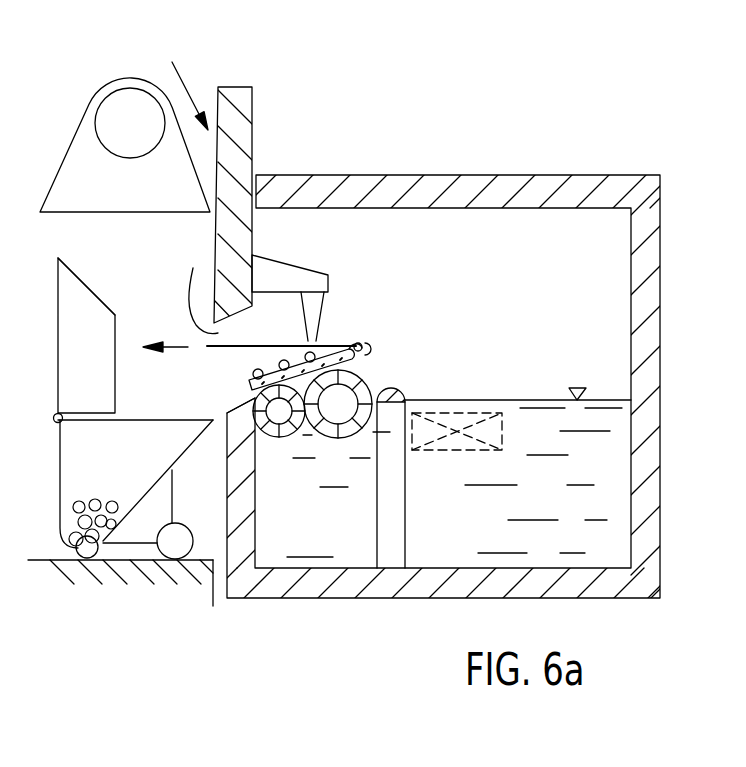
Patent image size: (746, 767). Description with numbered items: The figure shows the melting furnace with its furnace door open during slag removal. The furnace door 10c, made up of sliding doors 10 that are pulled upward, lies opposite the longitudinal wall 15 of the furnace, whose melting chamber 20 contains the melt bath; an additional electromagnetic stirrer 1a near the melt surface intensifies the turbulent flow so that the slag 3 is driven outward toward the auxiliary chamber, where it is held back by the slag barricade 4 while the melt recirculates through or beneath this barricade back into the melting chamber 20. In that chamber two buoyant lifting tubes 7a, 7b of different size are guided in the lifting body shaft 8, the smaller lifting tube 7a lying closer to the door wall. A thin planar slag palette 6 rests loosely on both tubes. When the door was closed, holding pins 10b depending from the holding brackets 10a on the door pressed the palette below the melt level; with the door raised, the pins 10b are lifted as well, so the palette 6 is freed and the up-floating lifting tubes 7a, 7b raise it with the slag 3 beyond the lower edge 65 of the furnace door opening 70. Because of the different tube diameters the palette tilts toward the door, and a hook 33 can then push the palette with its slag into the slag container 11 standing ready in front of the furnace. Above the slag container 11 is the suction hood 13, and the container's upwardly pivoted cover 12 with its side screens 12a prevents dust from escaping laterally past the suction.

The additional electromagnetic stirrer 1a is at (508, 437).
The slag 3 is at (322, 346).
The slag barricade 4 is at (404, 390).
The slag palette 6 is at (372, 362).
The lifting tube of smaller diameter 7a is at (283, 440).
The lifting tube of larger diameter 7b is at (352, 440).
The lifting body shaft 8 is at (360, 532).
The sliding door 10 is at (245, 118).
The holding bracket 10a is at (283, 280).
The holding pin 10b is at (312, 310).
The furnace door 10c is at (181, 82).
The slag container 11 is at (70, 471).
The cover 12 is at (57, 320).
The side screen 12a is at (100, 345).
The suction hood 13 is at (72, 143).
The longitudinal wall 15 is at (648, 320).
The melting chamber 20 is at (604, 263).
The hook 33 is at (233, 355).
The lower edge of the furnace door opening 65 is at (242, 397).
The furnace door opening 70 is at (196, 285).